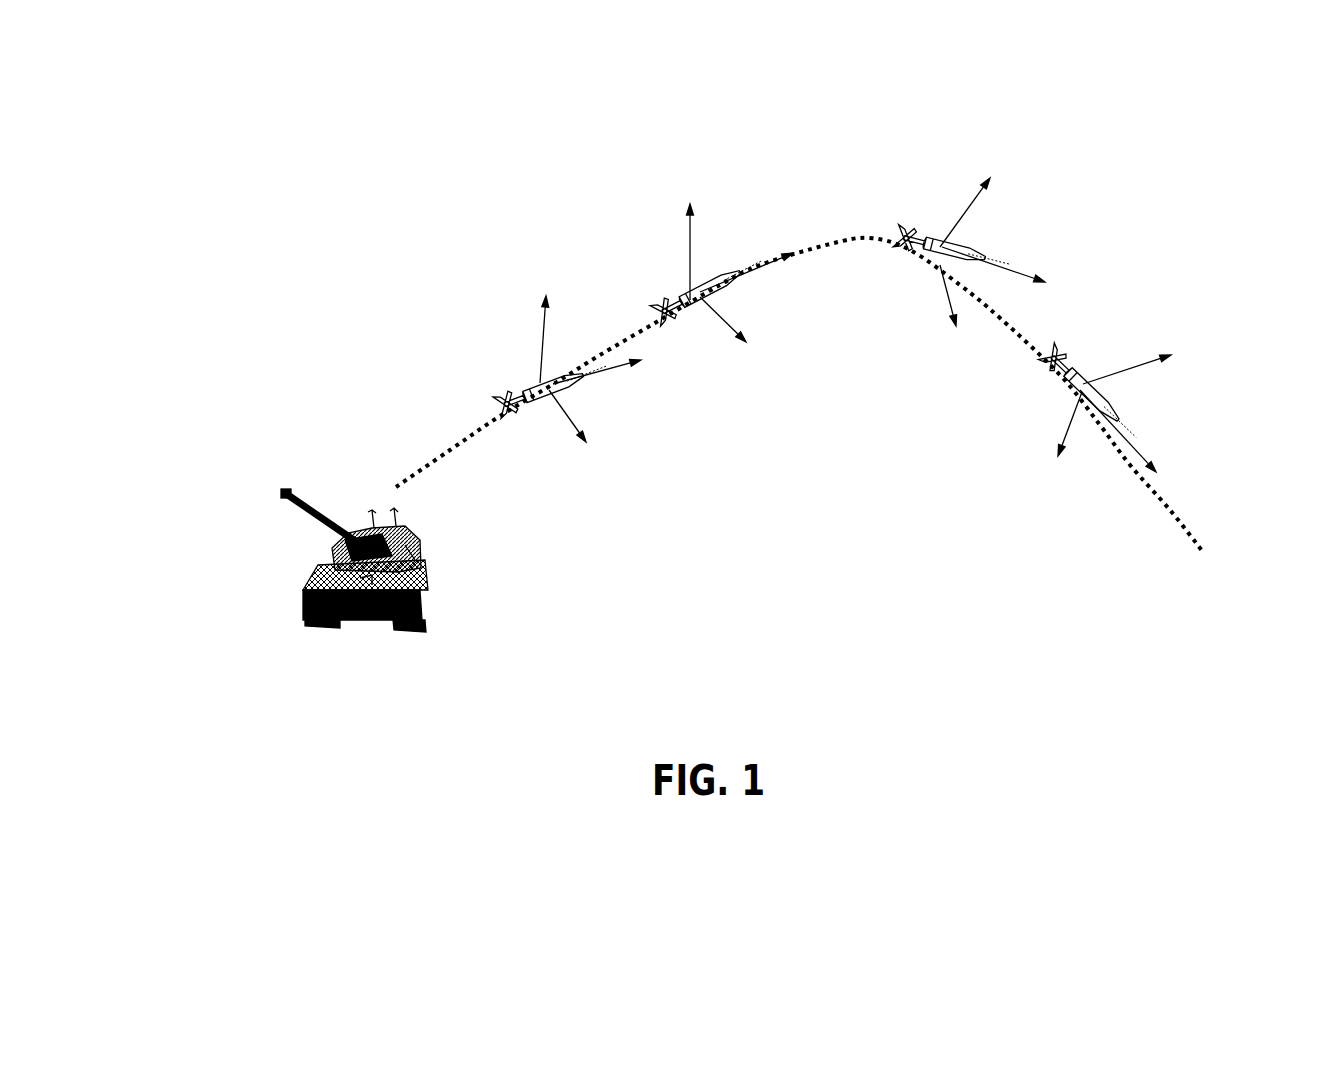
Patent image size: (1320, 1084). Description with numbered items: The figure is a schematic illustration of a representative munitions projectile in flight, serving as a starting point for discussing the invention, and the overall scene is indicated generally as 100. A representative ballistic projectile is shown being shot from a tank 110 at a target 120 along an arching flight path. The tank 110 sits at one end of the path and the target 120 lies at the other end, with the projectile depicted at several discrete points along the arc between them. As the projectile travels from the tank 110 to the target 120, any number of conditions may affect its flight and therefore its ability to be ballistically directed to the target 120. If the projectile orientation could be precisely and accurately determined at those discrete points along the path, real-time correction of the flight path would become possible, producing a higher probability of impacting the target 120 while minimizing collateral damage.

The guided projectile system / trajectory 100 is at (1184, 105).
The tank 110 is at (247, 610).
The target 120 is at (1195, 590).